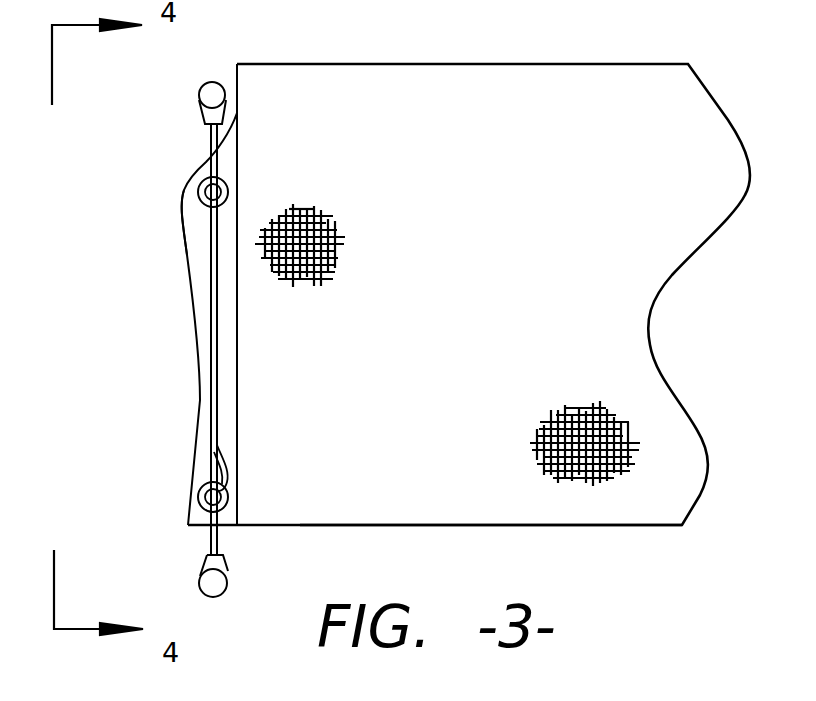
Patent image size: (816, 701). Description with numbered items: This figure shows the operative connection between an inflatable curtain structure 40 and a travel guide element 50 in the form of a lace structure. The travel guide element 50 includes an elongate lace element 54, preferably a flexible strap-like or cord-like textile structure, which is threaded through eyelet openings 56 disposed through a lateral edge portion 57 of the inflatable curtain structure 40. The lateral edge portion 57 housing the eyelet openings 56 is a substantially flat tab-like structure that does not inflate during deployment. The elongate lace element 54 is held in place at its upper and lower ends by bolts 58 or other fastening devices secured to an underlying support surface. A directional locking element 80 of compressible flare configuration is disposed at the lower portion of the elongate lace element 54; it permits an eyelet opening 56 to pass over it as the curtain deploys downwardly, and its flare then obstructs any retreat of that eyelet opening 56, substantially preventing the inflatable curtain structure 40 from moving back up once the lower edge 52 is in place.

The inflatable curtain structure 40 is at (507, 237).
The travel guide element 50 is at (190, 142).
The lower edge 52 is at (650, 527).
The elongate lace element 54 is at (209, 343).
The eyelet openings 56 is at (197, 178).
The lateral edge portion 57 is at (186, 216).
The bolts 58 is at (212, 88).
The directional locking element 80 is at (235, 443).